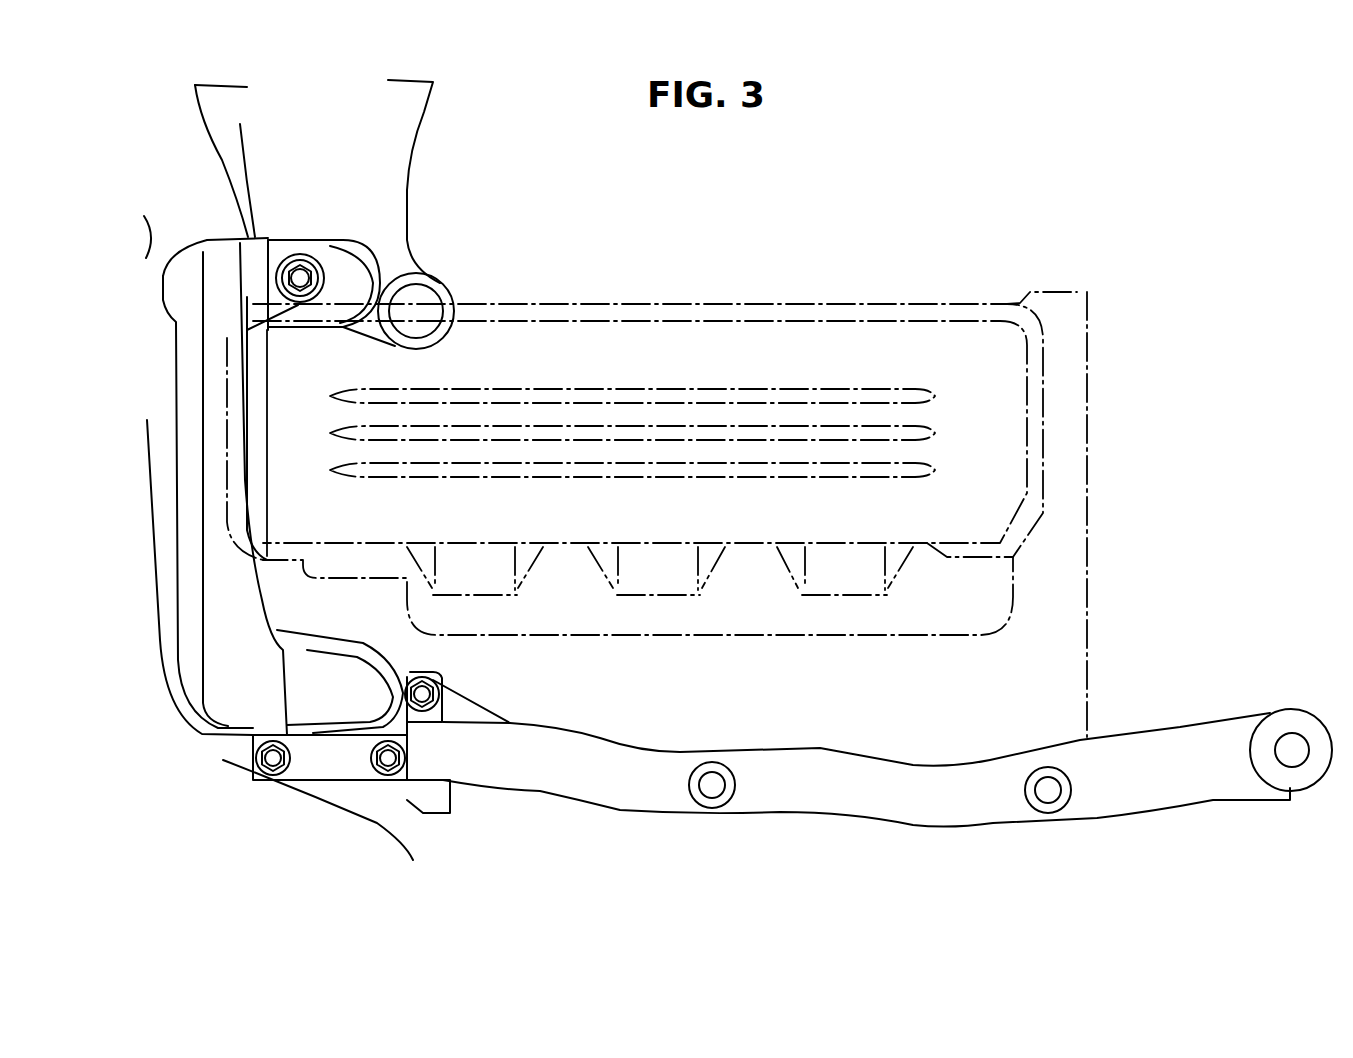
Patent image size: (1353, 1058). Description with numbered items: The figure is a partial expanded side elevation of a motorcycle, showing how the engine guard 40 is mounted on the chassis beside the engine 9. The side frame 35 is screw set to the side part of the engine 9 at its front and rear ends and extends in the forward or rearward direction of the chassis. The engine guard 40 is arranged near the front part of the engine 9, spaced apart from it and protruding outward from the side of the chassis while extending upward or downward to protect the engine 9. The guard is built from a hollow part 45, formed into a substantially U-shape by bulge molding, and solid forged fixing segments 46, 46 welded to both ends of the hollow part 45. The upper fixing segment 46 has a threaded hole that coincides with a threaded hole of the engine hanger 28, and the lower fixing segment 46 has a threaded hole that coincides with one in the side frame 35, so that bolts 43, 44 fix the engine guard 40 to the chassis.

The engine 9 is at (648, 360).
The engine hanger 28 is at (240, 124).
The side frame 35 is at (863, 800).
The engine guard 40 is at (220, 617).
The bolt 43 is at (297, 270).
The bolt 44 is at (258, 753).
The hollow part 45 is at (187, 487).
The fixing segment 46 is at (347, 255).